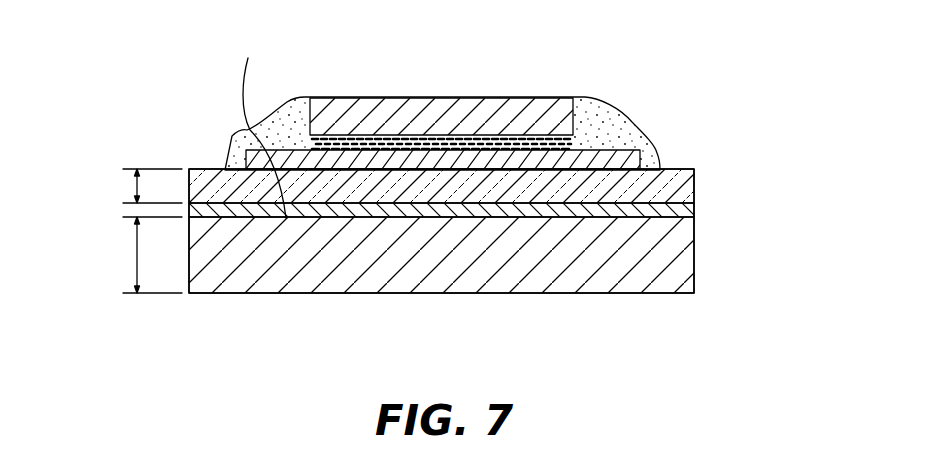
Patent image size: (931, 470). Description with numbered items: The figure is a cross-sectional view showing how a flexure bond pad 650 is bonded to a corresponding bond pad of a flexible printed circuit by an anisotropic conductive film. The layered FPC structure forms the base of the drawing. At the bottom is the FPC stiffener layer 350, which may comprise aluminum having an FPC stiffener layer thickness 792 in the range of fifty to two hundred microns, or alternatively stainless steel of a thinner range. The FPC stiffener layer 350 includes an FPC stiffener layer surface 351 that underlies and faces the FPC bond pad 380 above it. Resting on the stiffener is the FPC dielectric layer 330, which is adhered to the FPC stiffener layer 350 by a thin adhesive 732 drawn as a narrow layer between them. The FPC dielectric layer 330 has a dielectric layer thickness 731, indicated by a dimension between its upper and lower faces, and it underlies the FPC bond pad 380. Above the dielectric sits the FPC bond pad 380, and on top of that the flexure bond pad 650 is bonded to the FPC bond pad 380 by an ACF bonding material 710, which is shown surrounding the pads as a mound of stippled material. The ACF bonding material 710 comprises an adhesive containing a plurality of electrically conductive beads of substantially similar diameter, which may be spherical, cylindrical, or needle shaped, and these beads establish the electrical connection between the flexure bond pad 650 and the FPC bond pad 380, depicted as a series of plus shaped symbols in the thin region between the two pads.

The FPC stiffener layer surface 351 is at (259, 119).
The flexure bond pad 650 is at (490, 118).
The ACF bonding material 710 is at (603, 103).
The FPC bond pad 380 is at (645, 158).
The FPC dielectric layer 330 is at (680, 187).
The thin adhesive 732 is at (680, 210).
The FPC stiffener layer 350 is at (667, 255).
The dielectric layer thickness 731 is at (137, 188).
The FPC stiffener layer thickness 792 is at (137, 258).